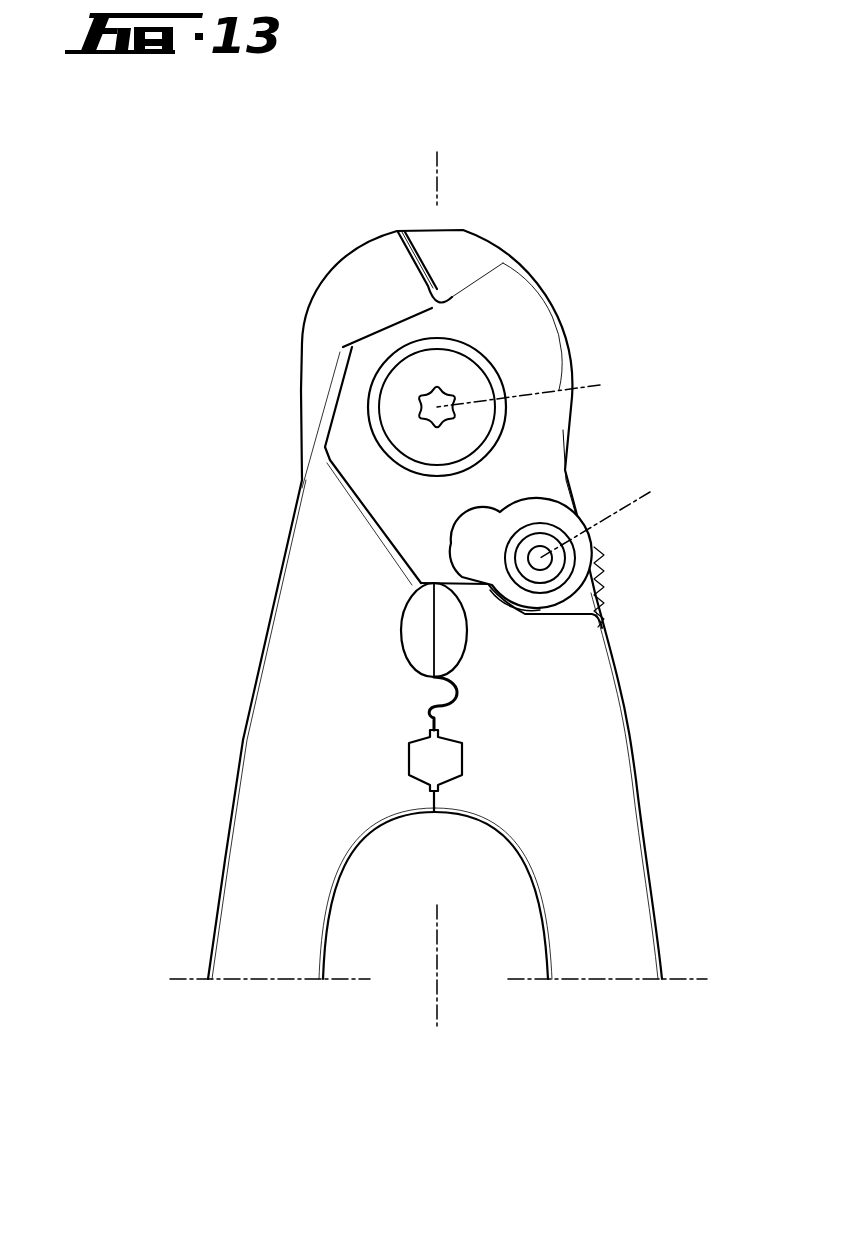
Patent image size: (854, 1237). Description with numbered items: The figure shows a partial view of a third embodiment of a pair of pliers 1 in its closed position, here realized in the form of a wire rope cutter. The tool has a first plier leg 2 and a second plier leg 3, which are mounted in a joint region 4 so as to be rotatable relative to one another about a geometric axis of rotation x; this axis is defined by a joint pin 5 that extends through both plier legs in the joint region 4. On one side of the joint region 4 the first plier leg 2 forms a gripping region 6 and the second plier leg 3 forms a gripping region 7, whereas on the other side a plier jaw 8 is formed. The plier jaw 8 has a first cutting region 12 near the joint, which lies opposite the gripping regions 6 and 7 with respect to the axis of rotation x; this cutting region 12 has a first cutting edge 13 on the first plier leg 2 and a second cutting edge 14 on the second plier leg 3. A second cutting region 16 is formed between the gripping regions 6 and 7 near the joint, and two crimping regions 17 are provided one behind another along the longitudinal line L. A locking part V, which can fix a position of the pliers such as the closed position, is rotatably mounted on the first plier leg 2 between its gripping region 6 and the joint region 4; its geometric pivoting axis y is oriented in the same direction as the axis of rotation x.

The pair of pliers 1 is at (583, 247).
The first plier leg 2 is at (577, 853).
The second plier leg 3 is at (282, 847).
The joint region 4 is at (510, 367).
The joint pin 5 is at (455, 374).
The gripping region 6 is at (608, 940).
The gripping region 7 is at (255, 950).
The plier jaw 8 is at (343, 262).
The cutting region 12 is at (400, 291).
The first cutting edge 13 is at (425, 290).
The second cutting edge 14 is at (428, 298).
The second cutting region 16 is at (450, 630).
The crimping regions 17 is at (473, 703).
The locking part V is at (625, 553).
The axis of rotation x is at (528, 388).
The pivoting axis y is at (605, 516).
The longitudinal line L is at (437, 587).